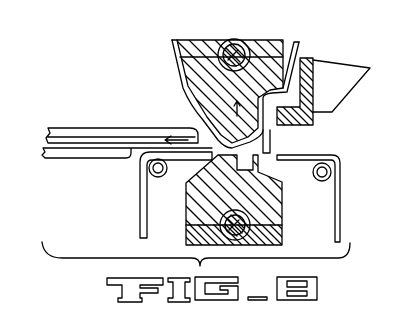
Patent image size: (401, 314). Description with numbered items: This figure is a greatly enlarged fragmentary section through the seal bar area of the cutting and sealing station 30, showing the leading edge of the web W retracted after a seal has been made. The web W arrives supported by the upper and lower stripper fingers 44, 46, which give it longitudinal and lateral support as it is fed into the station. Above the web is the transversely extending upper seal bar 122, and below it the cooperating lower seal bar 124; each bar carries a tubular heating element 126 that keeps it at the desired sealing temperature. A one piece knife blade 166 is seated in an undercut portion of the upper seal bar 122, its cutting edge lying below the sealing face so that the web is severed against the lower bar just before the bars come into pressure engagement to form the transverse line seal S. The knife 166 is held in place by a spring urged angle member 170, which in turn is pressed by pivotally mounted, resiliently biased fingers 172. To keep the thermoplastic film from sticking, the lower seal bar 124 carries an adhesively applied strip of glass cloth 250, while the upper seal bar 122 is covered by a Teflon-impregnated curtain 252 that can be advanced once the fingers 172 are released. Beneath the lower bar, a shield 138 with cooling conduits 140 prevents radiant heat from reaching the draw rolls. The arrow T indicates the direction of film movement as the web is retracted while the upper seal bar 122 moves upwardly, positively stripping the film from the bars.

The cutting and sealing station 30 is at (320, 46).
The stripper finger 44 is at (85, 129).
The stripper finger 46 is at (70, 157).
The upper seal bar 122 is at (272, 47).
The lower seal bar 124 is at (197, 210).
The tubular heating element 126 is at (234, 39).
The shield 138 is at (143, 203).
The conduit 140 is at (320, 182).
The knife blade 166 is at (277, 142).
The angle member 170 is at (318, 98).
The finger 172 is at (364, 82).
The strip of glass cloth 250 is at (190, 172).
The curtain 252 is at (173, 53).
The web W is at (58, 134).
The transverse line seal S is at (163, 153).
The arrow indicating direction of film movement T is at (180, 148).